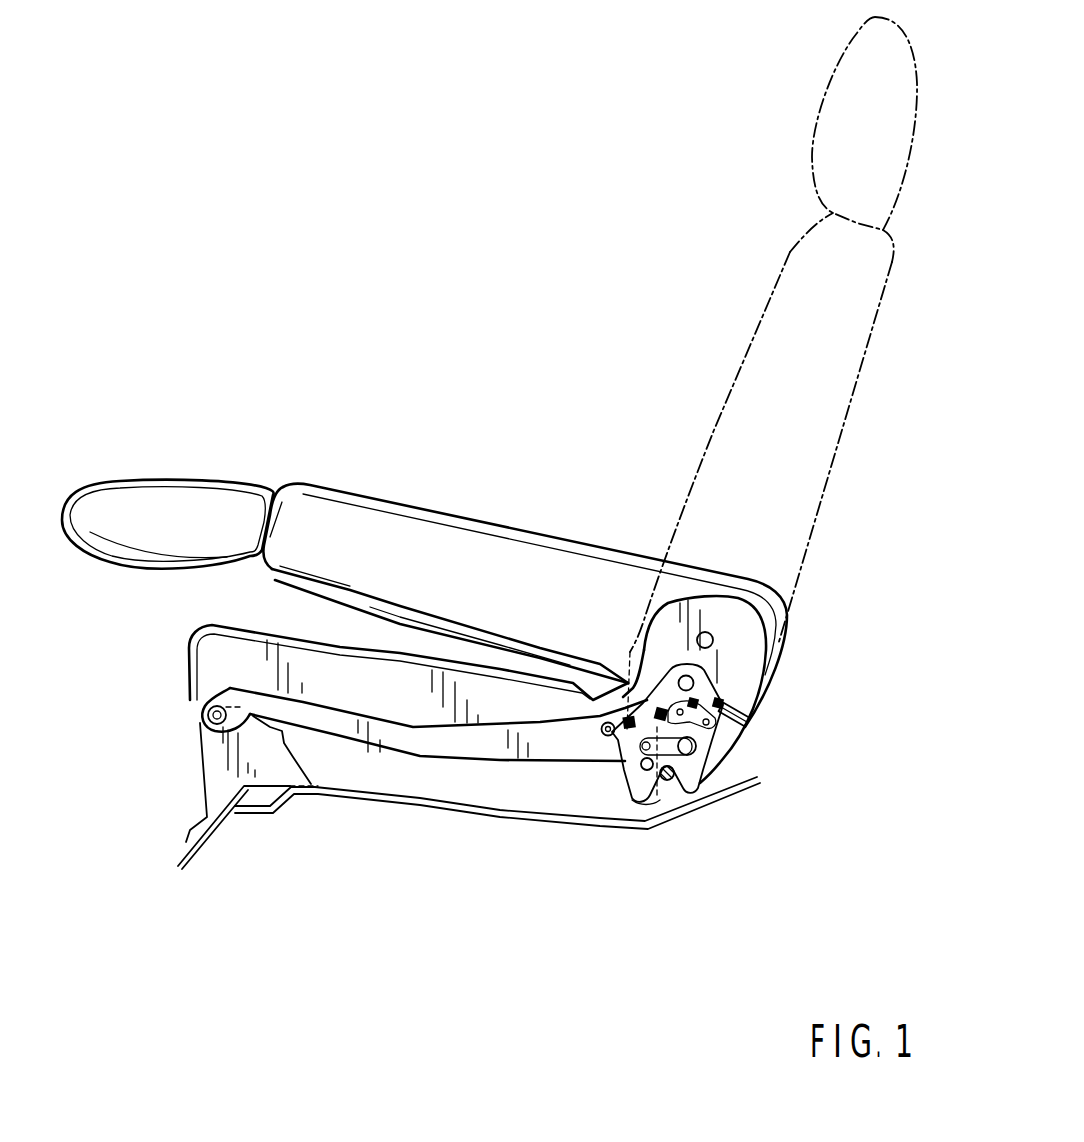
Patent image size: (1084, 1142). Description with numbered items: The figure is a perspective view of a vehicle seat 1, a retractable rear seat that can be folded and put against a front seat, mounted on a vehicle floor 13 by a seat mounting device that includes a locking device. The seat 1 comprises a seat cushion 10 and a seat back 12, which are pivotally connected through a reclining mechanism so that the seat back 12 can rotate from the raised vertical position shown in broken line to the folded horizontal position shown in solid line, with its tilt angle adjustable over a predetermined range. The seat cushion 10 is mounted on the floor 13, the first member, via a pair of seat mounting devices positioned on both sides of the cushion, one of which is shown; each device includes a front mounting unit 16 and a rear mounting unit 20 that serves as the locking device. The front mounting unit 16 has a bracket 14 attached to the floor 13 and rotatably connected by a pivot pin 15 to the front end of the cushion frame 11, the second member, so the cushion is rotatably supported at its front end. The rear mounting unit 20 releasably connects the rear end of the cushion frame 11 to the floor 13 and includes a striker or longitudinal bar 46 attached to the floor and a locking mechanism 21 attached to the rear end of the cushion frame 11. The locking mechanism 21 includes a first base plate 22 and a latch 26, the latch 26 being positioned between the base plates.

The vehicle seat 1 is at (484, 459).
The seat cushion 10 is at (207, 653).
The cushion frame 11 is at (487, 748).
The seat back 12 is at (493, 550).
The vehicle floor 13 is at (378, 803).
The bracket 14 is at (223, 778).
The pivot pin 15 is at (202, 721).
The front mounting unit 16 is at (175, 755).
The rear mounting unit 20 is at (735, 757).
The locking mechanism 21 is at (719, 677).
The first base plate 22 is at (700, 765).
The latch 26 is at (640, 805).
The striker 46 is at (650, 775).